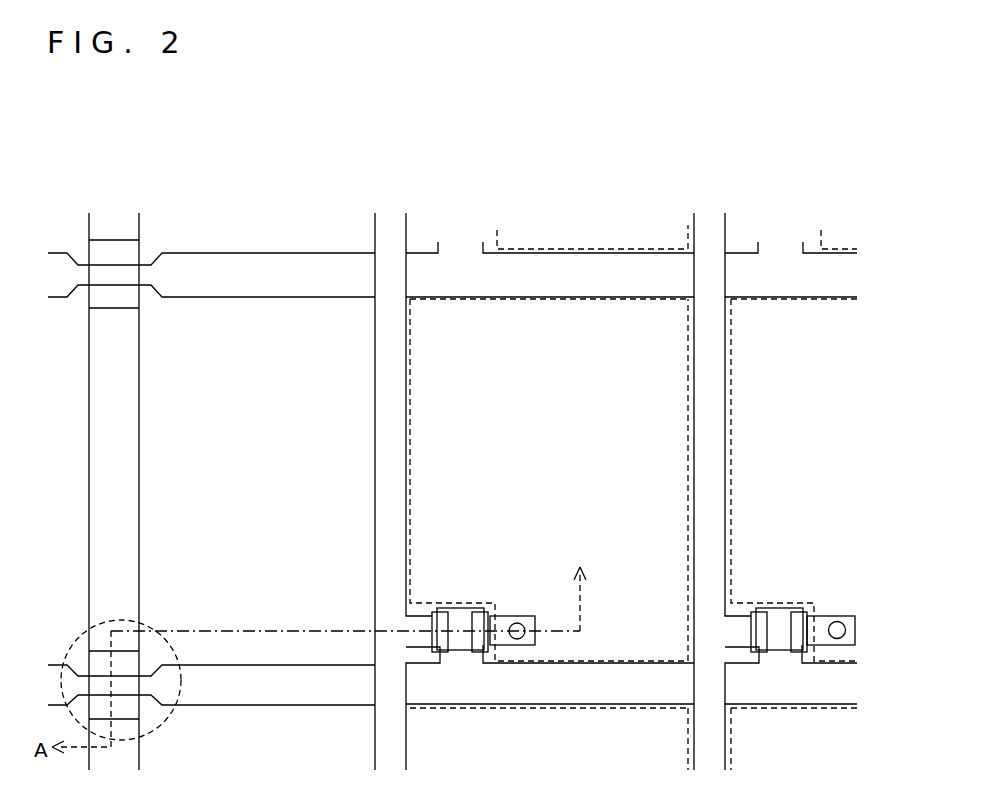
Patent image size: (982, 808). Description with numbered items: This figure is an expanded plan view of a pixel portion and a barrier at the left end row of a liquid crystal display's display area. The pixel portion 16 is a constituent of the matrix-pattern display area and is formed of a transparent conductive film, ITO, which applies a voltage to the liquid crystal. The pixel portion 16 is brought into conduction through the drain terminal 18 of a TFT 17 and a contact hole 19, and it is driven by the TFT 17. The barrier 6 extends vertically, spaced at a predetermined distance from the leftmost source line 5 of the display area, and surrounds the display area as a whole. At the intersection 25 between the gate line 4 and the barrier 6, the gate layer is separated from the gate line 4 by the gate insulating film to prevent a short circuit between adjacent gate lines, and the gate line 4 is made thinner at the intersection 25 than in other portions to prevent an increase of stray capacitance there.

The gate line 4 is at (605, 688).
The source line 5 is at (387, 724).
The barrier 6 is at (105, 455).
The pixel portion 16 is at (557, 325).
The TFT 17 is at (462, 608).
The drain terminal 18 is at (504, 641).
The contact hole 19 is at (518, 623).
The intersection 25 is at (82, 635).